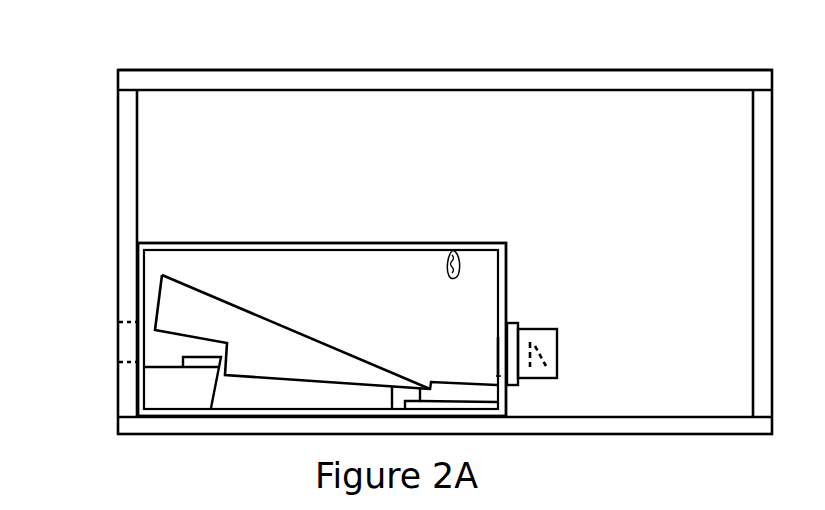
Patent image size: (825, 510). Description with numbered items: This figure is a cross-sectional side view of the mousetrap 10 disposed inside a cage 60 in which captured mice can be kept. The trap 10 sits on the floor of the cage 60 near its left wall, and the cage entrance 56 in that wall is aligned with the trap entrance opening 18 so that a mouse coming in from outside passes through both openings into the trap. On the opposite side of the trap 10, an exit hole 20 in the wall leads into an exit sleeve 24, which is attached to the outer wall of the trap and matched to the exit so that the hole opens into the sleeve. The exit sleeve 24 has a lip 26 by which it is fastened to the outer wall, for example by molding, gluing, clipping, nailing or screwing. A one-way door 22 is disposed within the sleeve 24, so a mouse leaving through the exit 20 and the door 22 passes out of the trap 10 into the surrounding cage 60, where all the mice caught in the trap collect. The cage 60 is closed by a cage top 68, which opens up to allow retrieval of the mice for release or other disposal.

The mousetrap 10 is at (218, 243).
The entrance opening 18 is at (143, 337).
The exit hole 20 is at (497, 338).
The one-way door 22 is at (538, 352).
The exit sleeve 24 is at (538, 329).
The lip 26 is at (513, 322).
The cage entrance 56 is at (127, 343).
The cage 60 is at (773, 143).
The cage top 68 is at (465, 69).